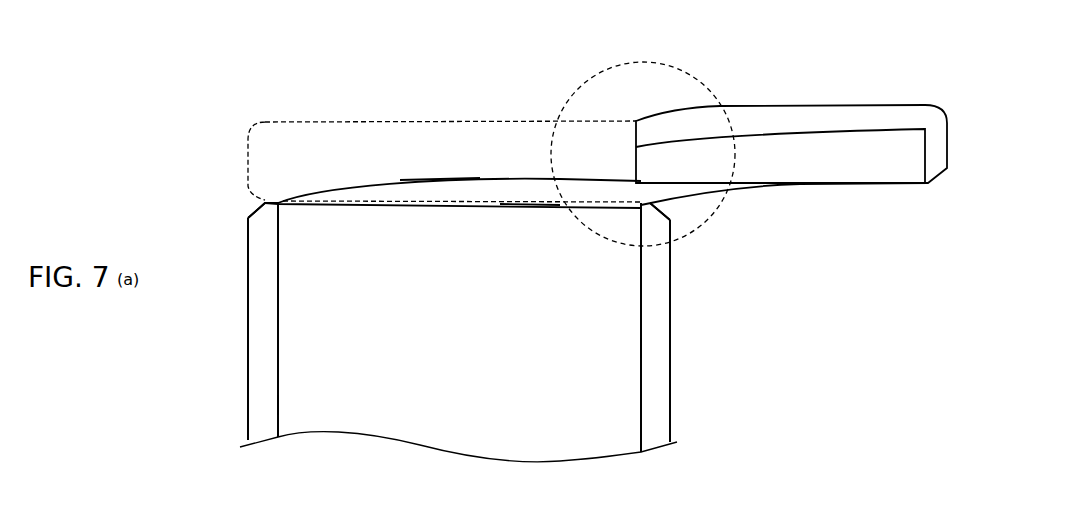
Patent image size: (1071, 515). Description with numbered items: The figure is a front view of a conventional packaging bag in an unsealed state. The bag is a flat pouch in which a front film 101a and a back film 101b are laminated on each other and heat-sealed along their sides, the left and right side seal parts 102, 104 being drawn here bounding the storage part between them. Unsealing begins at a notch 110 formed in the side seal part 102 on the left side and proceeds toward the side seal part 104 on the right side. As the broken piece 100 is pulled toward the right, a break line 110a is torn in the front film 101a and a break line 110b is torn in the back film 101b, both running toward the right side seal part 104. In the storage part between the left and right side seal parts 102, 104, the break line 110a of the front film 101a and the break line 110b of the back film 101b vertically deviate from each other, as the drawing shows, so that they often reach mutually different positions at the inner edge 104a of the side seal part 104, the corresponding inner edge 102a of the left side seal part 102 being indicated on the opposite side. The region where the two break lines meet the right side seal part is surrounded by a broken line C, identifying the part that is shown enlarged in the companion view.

The broken piece 100 is at (833, 105).
The front film 101a is at (603, 387).
The back film 101b is at (368, 196).
The side seal part 102 is at (248, 312).
The inner edge of side seal part 102a is at (278, 407).
The side seal part 104 is at (672, 290).
The inner edge of side seal part 104a is at (640, 352).
The notch 110 is at (263, 203).
The break line 110a is at (525, 205).
The break line 110b is at (439, 181).
The broken line C is at (645, 62).